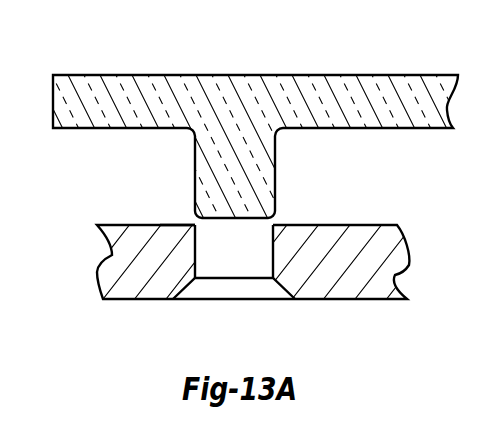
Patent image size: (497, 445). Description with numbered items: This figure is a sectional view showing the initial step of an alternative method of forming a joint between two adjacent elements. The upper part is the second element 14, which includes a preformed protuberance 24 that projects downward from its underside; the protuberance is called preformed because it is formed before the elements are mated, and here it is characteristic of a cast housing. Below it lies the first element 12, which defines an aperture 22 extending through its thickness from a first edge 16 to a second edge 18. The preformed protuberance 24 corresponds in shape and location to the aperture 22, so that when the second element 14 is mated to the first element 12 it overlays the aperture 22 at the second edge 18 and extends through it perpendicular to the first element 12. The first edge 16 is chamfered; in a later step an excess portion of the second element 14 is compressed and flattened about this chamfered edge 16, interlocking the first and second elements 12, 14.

The first element 12 is at (137, 292).
The second element 14 is at (236, 142).
The first edge 16 is at (193, 285).
The second edge 18 is at (195, 225).
The aperture 22 is at (241, 262).
The preformed protuberance 24 is at (258, 180).